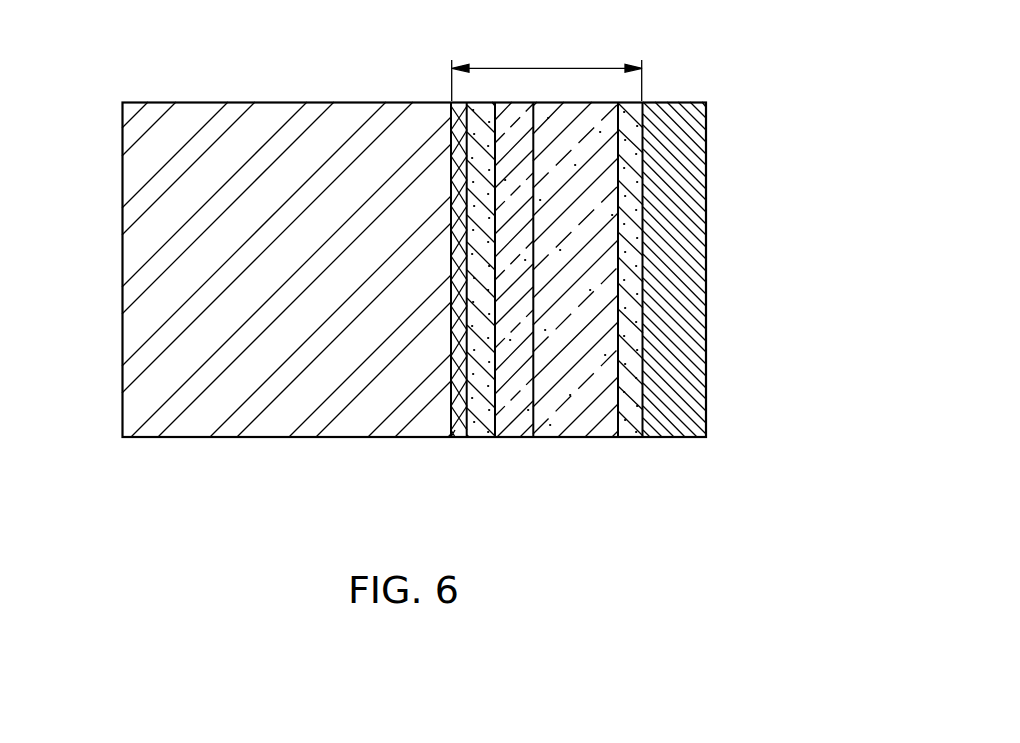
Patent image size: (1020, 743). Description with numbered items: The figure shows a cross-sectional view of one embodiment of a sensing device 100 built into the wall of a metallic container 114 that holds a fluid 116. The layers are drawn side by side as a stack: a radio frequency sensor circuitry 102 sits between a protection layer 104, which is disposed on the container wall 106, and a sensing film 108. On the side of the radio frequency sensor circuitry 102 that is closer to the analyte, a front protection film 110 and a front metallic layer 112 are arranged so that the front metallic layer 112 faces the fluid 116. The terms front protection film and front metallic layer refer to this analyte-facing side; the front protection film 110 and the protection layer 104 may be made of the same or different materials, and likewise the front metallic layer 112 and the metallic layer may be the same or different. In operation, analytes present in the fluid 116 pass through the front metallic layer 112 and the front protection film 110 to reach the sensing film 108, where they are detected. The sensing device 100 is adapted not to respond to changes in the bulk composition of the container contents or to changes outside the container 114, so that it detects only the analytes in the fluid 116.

The sensing device 100 is at (547, 68).
The radio frequency sensor circuitry 102 is at (585, 438).
The protection layer 104 is at (632, 438).
The container wall 106 is at (672, 102).
The sensing film 108 is at (518, 438).
The front protection film 110 is at (482, 438).
The front metallic layer 112 is at (455, 438).
The container 114 is at (340, 438).
The fluid 116 is at (275, 127).